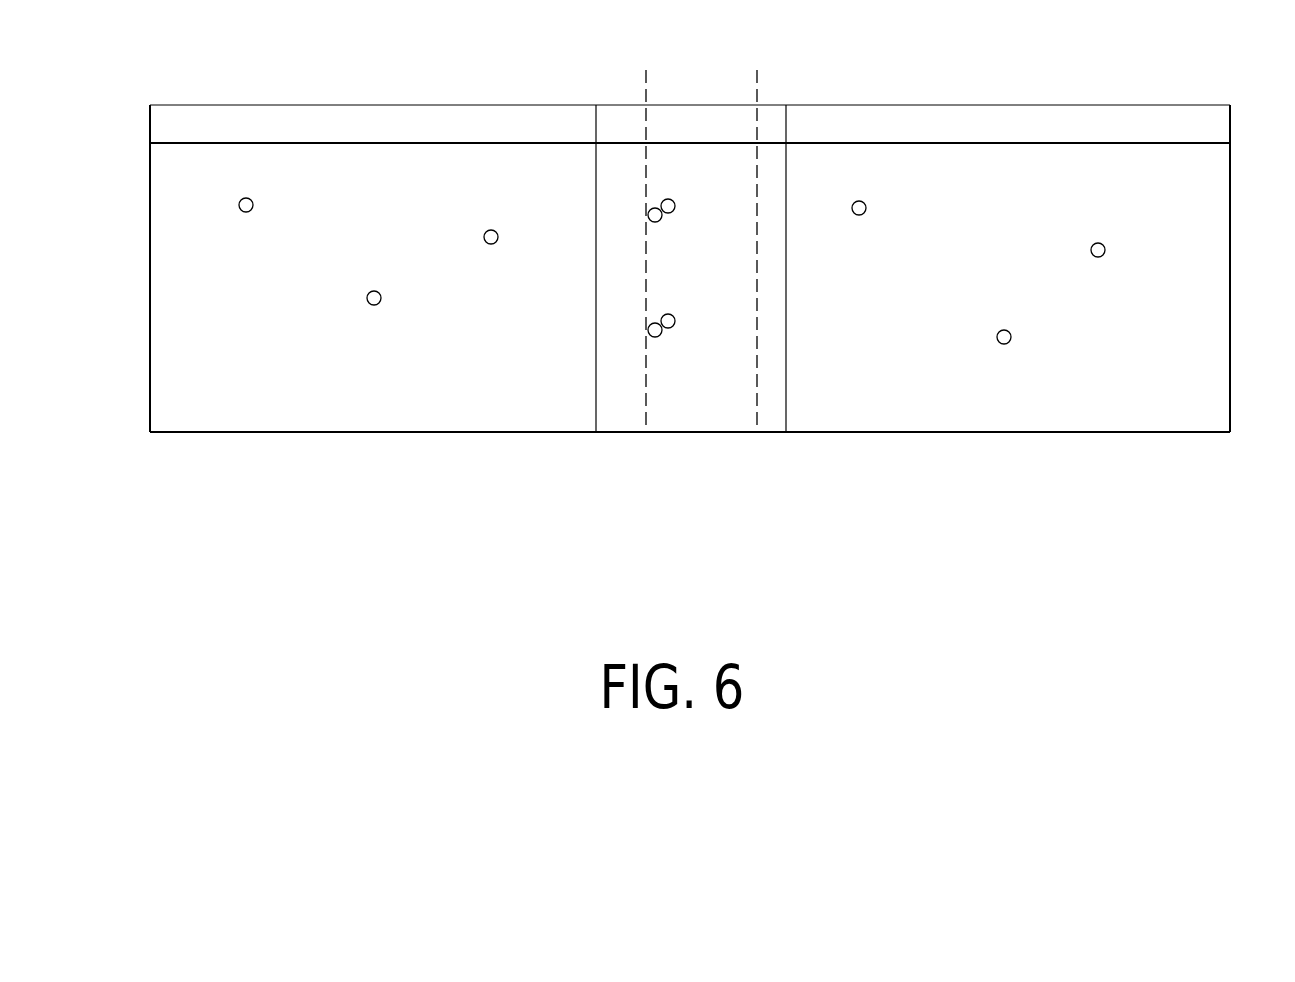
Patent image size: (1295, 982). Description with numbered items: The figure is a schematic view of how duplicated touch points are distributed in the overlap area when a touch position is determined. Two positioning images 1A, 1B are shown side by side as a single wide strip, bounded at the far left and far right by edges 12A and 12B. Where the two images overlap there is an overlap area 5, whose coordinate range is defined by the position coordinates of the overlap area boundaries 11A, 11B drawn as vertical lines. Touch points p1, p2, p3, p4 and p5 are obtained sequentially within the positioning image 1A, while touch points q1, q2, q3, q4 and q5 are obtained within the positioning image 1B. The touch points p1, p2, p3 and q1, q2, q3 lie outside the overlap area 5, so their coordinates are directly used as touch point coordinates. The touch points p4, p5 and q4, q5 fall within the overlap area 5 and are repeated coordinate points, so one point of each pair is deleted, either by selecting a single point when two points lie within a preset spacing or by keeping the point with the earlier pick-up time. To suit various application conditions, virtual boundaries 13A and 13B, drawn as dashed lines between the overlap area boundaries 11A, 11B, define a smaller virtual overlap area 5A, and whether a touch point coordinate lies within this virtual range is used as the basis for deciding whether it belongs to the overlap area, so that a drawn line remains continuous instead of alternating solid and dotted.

The positioning image 1A is at (378, 105).
The positioning image 1B is at (968, 105).
The overlap area 5 is at (786, 105).
The virtual overlap area 5A is at (646, 68).
The overlap area boundary 11A is at (786, 432).
The overlap area boundary 11B is at (596, 432).
The first edge 12A is at (150, 432).
The second edge 12B is at (1230, 432).
The virtual boundary 13A is at (757, 432).
The virtual boundary 13B is at (645, 432).
The touch point p1 is at (265, 200).
The touch point p2 is at (393, 293).
The touch point p3 is at (511, 232).
The touch point p4 is at (636, 209).
The touch point p5 is at (636, 325).
The touch point q1 is at (1116, 249).
The touch point q2 is at (1023, 335).
The touch point q3 is at (878, 207).
The touch point q4 is at (688, 200).
The touch point q5 is at (688, 316).